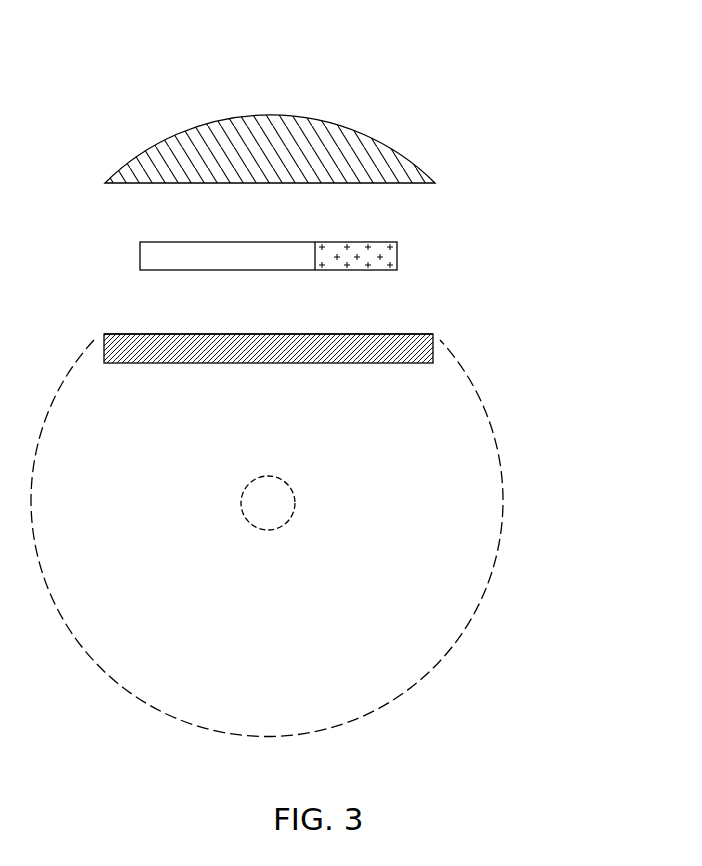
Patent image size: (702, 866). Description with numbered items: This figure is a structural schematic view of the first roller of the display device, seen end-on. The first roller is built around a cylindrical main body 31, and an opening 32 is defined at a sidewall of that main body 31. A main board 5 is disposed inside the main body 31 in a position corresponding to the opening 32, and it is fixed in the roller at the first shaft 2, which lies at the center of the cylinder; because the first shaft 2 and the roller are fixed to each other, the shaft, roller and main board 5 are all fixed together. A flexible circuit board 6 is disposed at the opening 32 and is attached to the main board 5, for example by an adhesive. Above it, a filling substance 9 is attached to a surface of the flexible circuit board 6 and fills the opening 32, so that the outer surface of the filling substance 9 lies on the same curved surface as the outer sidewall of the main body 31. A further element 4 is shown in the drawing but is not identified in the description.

The first shaft 2 is at (280, 507).
The light source 4 is at (368, 262).
The main board 5 is at (192, 352).
The flexible circuit board 6 is at (207, 257).
The filling substance 9 is at (265, 163).
The main body of the first roller 31 is at (502, 507).
The opening of the first roller 32 is at (383, 323).